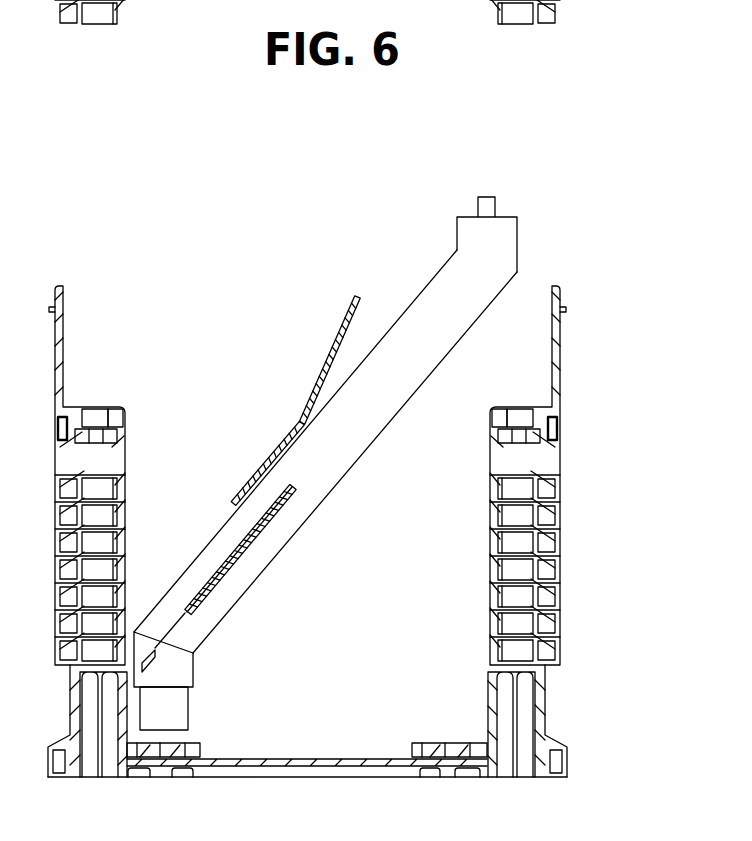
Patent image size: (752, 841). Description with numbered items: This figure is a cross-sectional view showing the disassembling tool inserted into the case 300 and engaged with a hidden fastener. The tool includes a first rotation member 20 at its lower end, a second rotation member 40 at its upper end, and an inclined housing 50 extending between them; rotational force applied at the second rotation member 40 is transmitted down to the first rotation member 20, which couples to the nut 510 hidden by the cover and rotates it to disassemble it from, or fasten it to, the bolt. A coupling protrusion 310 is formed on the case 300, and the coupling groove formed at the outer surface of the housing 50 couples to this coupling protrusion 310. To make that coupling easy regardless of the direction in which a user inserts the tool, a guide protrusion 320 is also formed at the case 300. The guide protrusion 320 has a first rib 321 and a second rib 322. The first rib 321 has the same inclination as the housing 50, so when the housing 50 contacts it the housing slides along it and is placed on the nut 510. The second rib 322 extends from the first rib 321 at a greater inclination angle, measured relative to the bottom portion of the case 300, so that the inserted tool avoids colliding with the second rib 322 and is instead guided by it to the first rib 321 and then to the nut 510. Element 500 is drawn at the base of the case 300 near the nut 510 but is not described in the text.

The first rotation member 20 is at (189, 702).
The second rotation member 40 is at (497, 207).
The housing 50 is at (362, 436).
The case 300 is at (557, 378).
The coupling protrusion 310 is at (237, 558).
The guide protrusion 320 is at (279, 396).
The first rib 321 is at (270, 455).
The second rib 322 is at (331, 348).
The fixing block 500 is at (432, 742).
The nut 510 is at (187, 744).